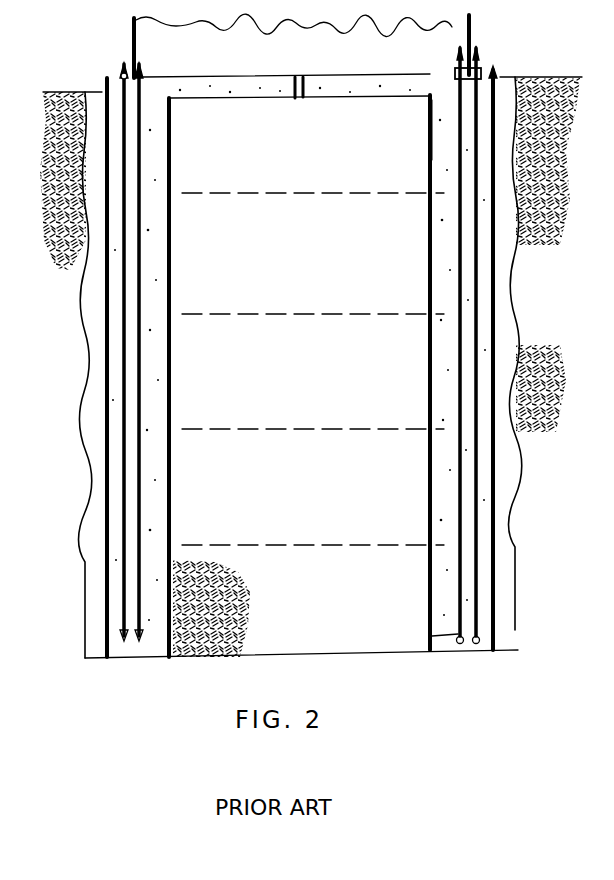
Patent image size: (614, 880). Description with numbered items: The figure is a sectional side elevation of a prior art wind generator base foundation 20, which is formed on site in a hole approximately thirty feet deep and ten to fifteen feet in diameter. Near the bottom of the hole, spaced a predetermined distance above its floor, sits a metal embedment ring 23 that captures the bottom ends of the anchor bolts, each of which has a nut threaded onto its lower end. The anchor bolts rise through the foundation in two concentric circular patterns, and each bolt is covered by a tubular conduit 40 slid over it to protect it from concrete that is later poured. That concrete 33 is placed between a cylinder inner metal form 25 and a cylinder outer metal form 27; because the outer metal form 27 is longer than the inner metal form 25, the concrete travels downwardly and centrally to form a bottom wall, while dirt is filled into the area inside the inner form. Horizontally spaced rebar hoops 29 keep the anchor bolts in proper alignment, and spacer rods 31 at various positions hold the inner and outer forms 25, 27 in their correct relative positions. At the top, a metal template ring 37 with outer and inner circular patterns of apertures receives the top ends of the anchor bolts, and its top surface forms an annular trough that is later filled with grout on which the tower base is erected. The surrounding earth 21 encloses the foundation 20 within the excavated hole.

The base foundation 20 is at (193, 685).
The earth / soil 21 is at (74, 90).
The metal embedment ring 23 is at (443, 634).
The cylinder inner metal form 25 is at (423, 495).
The cylinder outer metal form 27 is at (502, 482).
The rebar hoops 29 is at (297, 195).
The spacer rods 31 is at (422, 165).
The concrete 33 is at (520, 602).
The metal template ring 37 is at (500, 70).
The tubular conduit 40 is at (503, 293).